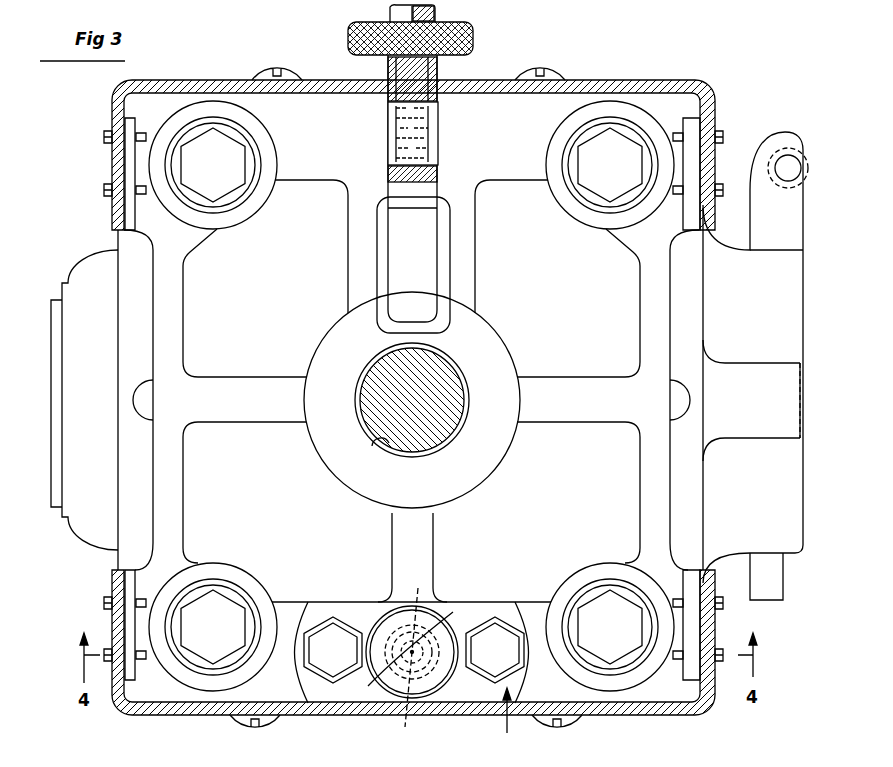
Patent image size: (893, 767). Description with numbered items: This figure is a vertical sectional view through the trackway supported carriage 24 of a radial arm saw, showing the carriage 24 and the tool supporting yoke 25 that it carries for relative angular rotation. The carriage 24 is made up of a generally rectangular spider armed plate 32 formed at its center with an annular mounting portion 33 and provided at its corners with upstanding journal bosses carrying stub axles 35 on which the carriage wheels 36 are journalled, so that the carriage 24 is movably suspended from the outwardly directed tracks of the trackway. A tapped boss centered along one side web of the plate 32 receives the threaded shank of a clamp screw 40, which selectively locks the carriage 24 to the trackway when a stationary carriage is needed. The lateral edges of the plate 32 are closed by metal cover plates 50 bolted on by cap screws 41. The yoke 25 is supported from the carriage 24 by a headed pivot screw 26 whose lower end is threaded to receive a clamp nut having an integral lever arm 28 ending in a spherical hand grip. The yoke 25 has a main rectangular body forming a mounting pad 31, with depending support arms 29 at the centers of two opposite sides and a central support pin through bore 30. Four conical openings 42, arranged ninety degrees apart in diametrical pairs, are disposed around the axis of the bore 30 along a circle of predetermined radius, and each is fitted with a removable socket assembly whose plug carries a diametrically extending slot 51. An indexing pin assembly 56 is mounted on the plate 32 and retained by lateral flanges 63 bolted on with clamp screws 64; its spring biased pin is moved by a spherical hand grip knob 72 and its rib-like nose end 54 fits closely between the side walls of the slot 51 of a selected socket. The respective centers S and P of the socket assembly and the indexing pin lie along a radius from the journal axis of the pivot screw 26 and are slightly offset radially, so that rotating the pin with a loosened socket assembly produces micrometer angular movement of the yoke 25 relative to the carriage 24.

The tool carriage 24 is at (693, 78).
The tool supporting yoke 25 is at (72, 280).
The headed pivot screw 26 is at (402, 398).
The lever arm 28 is at (432, 18).
The depending support arms 29 is at (90, 522).
The support pin through bore 30 is at (383, 448).
The mounting pad 31 is at (286, 293).
The spider armed plate 32 is at (162, 694).
The annular mounting portion 33 is at (472, 483).
The stub axles 35 is at (620, 638).
The carriage wheels 36 is at (257, 137).
The clamp screw 40 is at (437, 76).
The cap screws 41 is at (274, 68).
The conical openings 42 is at (148, 400).
The metal cover plates 50 is at (598, 80).
The slot 51 is at (413, 606).
The nose end 54 is at (400, 670).
The indexing pin assembly 56 is at (505, 721).
The lateral flanges 63 is at (300, 683).
The clamp screws 64 is at (323, 660).
The spherical hand grip knob 72 is at (452, 672).
The center of socket assembly S is at (419, 645).
The center of indexing pin P is at (372, 686).